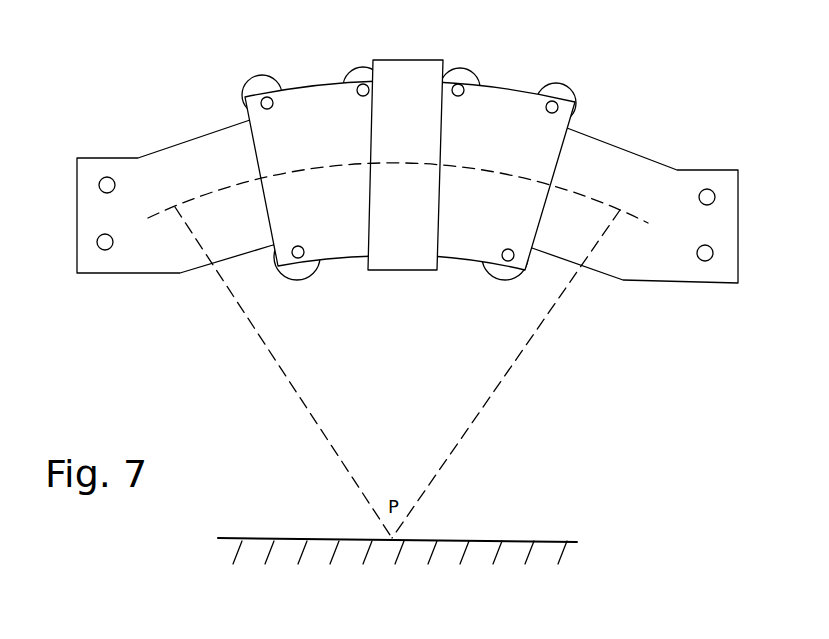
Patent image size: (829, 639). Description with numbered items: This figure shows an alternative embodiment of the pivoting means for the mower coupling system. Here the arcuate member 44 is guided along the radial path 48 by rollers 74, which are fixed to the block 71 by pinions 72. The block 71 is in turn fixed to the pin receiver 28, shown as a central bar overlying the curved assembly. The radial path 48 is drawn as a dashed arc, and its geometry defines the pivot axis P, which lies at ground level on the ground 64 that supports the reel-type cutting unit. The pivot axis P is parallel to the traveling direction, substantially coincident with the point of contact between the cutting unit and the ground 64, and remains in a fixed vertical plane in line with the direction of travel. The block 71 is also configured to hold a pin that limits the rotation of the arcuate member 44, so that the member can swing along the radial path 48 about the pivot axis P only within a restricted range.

The arcuate member 44 is at (167, 162).
The rollers 74 is at (260, 82).
The block 71 is at (317, 98).
The pinions 72 is at (474, 78).
The radial path 48 is at (163, 213).
The pin receiver 28 is at (387, 262).
The ground 64 is at (543, 547).